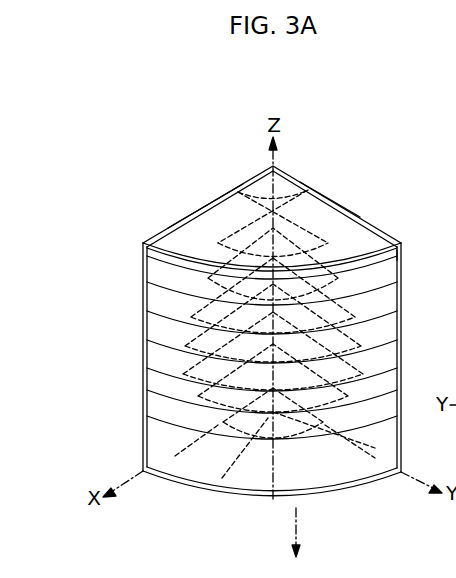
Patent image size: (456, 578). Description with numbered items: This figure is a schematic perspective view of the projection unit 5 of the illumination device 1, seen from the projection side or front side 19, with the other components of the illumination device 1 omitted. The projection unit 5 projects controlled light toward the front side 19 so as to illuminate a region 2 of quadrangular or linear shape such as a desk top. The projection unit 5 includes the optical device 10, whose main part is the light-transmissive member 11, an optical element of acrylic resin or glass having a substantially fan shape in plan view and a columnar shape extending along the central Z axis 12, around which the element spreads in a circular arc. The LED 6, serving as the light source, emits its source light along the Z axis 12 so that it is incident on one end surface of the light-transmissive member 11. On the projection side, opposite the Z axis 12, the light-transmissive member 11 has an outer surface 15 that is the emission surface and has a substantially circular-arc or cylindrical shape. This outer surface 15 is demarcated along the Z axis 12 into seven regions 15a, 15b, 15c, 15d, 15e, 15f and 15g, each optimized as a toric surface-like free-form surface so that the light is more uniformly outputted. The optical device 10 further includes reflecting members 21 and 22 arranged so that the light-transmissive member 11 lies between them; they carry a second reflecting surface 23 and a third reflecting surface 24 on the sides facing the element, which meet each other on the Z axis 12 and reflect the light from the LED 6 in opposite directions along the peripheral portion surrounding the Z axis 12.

The illumination device 1 is at (179, 196).
The region 2 is at (426, 260).
The projection unit 5 is at (197, 178).
The LED 6 is at (222, 478).
The optical device 10 is at (304, 174).
The light-transmissive member 11 is at (320, 217).
The Z axis 12 is at (268, 150).
The outer surface 15 is at (162, 271).
The region of the outer surface 15a is at (163, 302).
The region of the outer surface 15b is at (163, 332).
The region of the outer surface 15c is at (163, 359).
The region of the outer surface 15d is at (163, 384).
The region of the outer surface 15e is at (163, 408).
The region of the outer surface 15f is at (163, 436).
The region of the outer surface 15g is at (160, 463).
The front side 19 is at (298, 530).
The reflecting member 21 is at (167, 228).
The reflecting member 22 is at (359, 212).
The second reflecting surface 23 is at (162, 238).
The third reflecting surface 24 is at (372, 236).